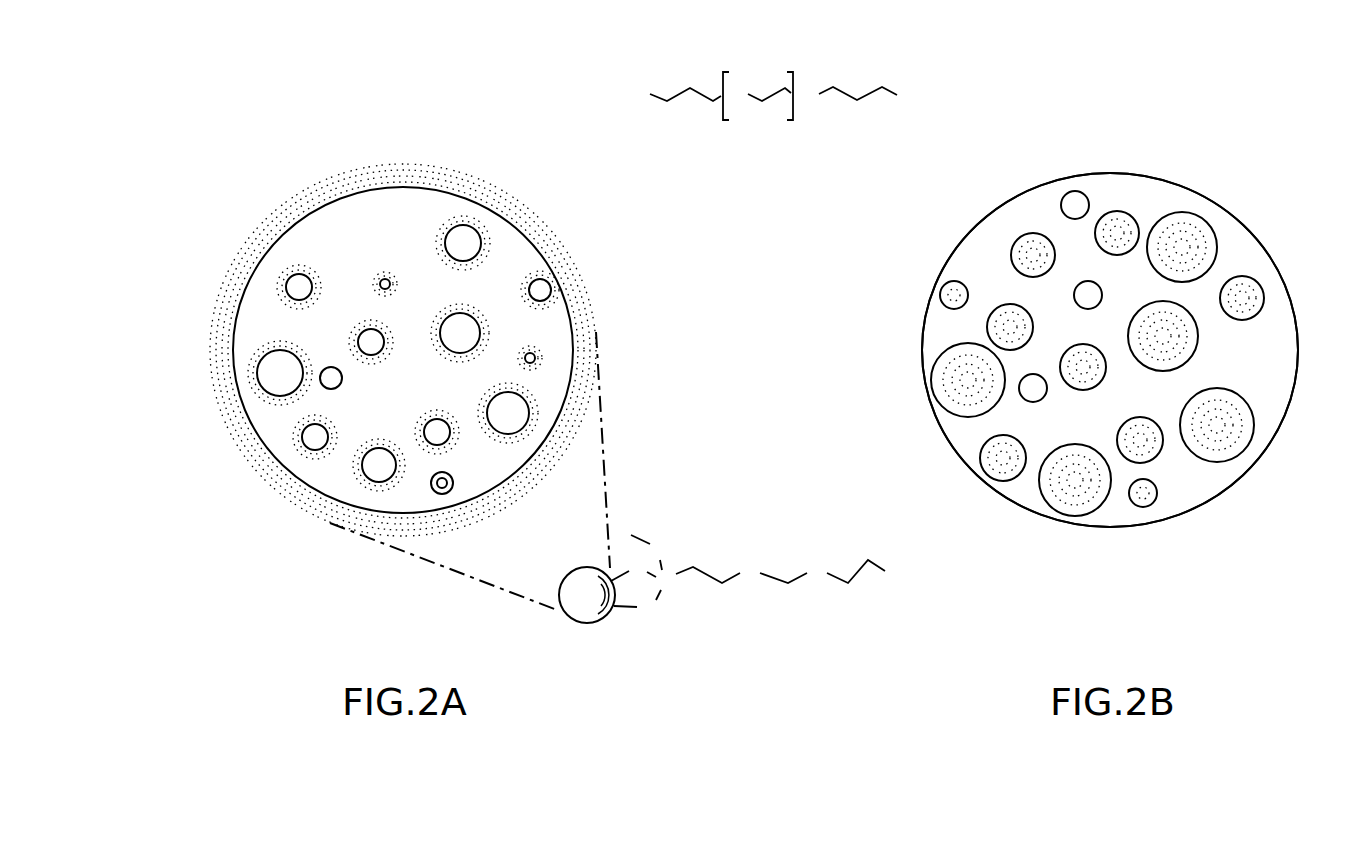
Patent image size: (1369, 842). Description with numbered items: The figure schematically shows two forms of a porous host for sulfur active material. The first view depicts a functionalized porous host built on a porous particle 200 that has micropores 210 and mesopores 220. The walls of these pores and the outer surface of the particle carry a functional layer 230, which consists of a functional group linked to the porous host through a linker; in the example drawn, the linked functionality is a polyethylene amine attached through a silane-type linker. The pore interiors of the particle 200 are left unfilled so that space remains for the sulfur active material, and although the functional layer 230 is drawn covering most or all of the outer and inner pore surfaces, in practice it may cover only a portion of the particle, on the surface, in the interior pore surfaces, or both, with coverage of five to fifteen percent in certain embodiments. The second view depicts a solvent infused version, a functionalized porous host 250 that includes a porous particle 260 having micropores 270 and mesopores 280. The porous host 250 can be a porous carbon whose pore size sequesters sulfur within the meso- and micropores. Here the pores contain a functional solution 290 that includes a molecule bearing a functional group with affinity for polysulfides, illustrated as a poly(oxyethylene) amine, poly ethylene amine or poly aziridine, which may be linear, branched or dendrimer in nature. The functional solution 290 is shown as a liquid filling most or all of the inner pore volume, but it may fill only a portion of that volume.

In FIG. 2A, the porous particle 200 is at (317, 208).
In FIG. 2A, the micropores 210 is at (470, 245).
In FIG. 2A, the mesopores 220 is at (541, 290).
In FIG. 2A, the functional layer 230 is at (678, 632).
In FIG. 2B, the functionalized porous host 250 is at (1124, 98).
In FIG. 2B, the porous particle 260 is at (942, 330).
In FIG. 2B, the micropores 270 is at (1030, 243).
In FIG. 2B, the mesopores 280 is at (1255, 282).
In FIG. 2B, the functional solution 290 is at (1250, 445).